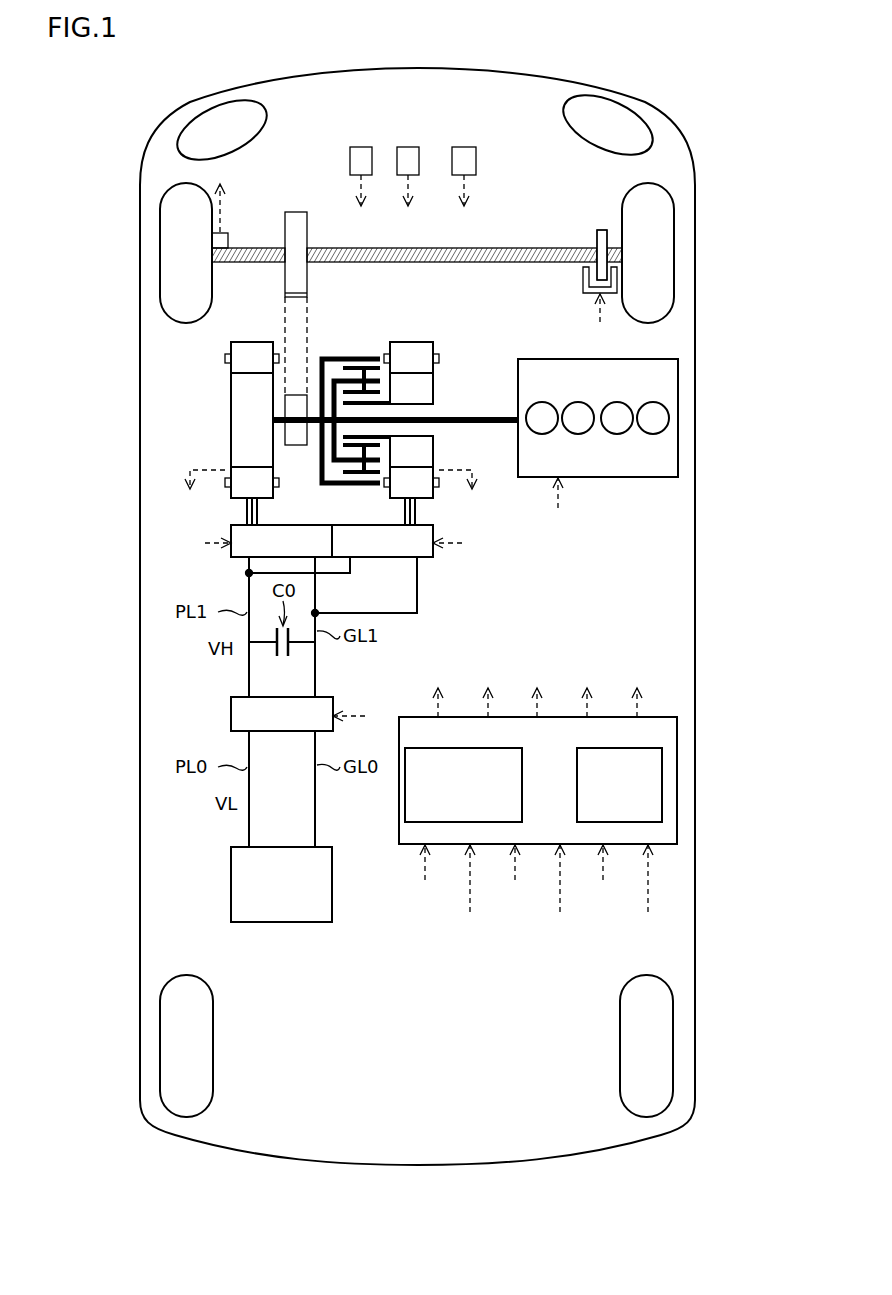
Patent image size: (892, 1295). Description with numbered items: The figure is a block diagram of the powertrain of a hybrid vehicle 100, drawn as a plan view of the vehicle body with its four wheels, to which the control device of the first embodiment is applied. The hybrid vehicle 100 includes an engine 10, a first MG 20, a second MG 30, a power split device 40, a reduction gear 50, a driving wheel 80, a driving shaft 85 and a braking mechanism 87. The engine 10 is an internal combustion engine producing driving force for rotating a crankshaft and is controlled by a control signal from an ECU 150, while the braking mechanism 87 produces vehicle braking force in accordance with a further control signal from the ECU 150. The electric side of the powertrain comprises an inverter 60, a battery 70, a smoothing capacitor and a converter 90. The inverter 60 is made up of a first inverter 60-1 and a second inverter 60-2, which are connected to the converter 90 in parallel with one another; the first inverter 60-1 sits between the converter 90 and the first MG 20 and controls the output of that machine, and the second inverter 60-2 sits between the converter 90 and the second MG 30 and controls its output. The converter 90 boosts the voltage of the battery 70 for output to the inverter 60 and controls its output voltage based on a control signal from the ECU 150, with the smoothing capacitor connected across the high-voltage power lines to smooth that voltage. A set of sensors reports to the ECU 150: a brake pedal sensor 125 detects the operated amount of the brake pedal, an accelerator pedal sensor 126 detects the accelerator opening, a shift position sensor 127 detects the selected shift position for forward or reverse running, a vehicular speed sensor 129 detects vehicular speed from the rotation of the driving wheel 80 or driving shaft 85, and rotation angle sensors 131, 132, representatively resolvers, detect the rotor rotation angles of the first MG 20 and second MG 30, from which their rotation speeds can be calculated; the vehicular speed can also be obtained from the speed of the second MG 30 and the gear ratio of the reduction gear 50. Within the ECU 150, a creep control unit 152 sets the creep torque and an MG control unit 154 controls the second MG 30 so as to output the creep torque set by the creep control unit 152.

The hybrid vehicle 100 is at (201, 64).
The engine 10 is at (553, 359).
The first MG 20 is at (411, 342).
The second MG 30 is at (250, 342).
The power split device 40 is at (353, 357).
The reduction gear 50 is at (297, 210).
The inverter 60 is at (228, 560).
The first inverter 60-1 is at (343, 525).
The second inverter 60-2 is at (245, 525).
The battery 70 is at (231, 856).
The driving wheel 80 is at (673, 262).
The driving shaft 85 is at (476, 263).
The braking mechanism 87 is at (587, 238).
The converter 90 is at (231, 712).
The brake pedal sensor 125 is at (361, 147).
The accelerator pedal sensor 126 is at (408, 147).
The shift position sensor 127 is at (464, 147).
The vehicular speed sensor 129 is at (229, 240).
The rotation angle sensor 131 is at (439, 469).
The rotation angle sensor 132 is at (225, 469).
The ECU 150 is at (399, 822).
The creep control unit 152 is at (467, 748).
The MG control unit 154 is at (619, 748).